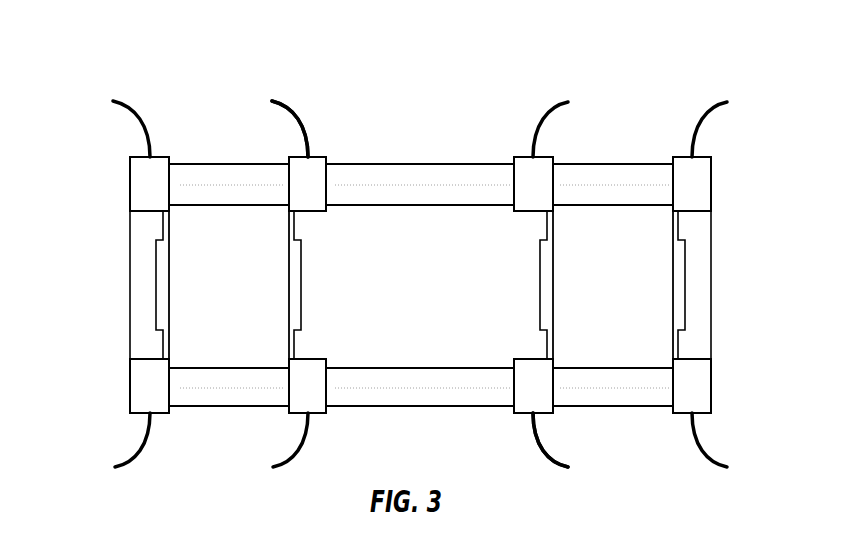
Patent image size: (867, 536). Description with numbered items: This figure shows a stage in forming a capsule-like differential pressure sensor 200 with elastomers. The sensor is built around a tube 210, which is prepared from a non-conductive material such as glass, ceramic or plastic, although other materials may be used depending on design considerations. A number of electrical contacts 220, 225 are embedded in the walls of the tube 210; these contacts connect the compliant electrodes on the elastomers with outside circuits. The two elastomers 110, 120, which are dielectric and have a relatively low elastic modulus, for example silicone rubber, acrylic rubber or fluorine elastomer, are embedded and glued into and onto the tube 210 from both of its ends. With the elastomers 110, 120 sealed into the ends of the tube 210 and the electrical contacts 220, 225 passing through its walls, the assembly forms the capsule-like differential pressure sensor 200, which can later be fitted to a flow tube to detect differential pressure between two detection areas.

The differential pressure sensor 200 is at (114, 38).
The elastomer 110 is at (180, 266).
The elastomer 120 is at (662, 265).
The tube 210 is at (413, 163).
The electrical contact 220 is at (309, 157).
The electrical contact 225 is at (534, 420).